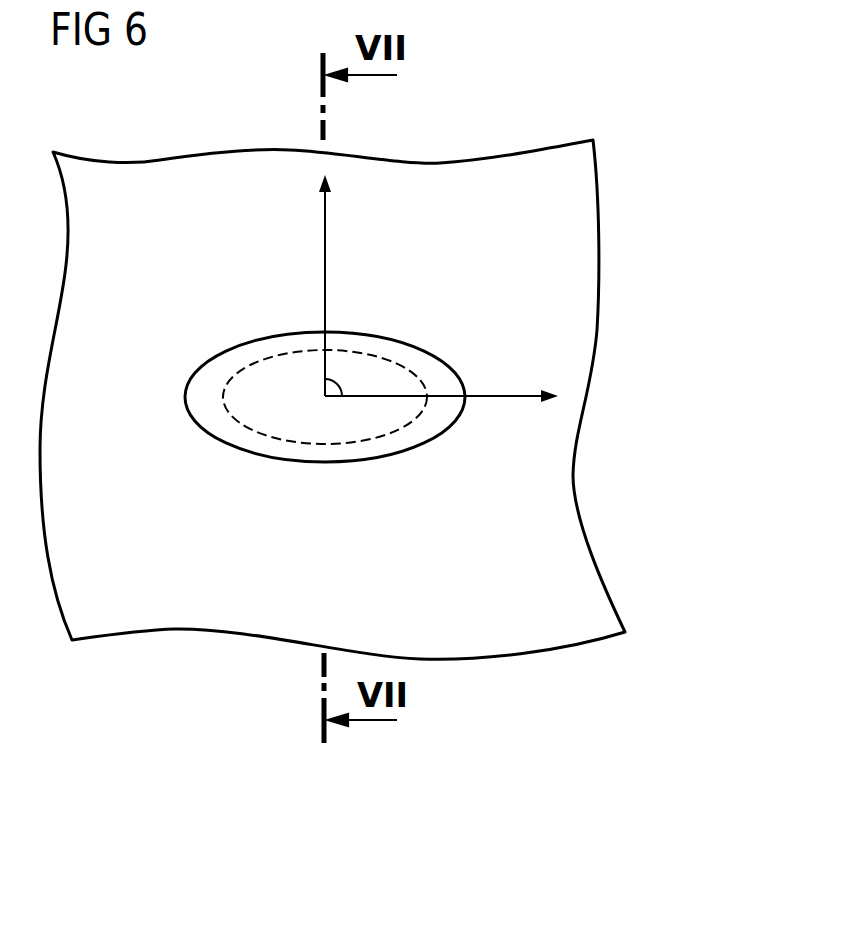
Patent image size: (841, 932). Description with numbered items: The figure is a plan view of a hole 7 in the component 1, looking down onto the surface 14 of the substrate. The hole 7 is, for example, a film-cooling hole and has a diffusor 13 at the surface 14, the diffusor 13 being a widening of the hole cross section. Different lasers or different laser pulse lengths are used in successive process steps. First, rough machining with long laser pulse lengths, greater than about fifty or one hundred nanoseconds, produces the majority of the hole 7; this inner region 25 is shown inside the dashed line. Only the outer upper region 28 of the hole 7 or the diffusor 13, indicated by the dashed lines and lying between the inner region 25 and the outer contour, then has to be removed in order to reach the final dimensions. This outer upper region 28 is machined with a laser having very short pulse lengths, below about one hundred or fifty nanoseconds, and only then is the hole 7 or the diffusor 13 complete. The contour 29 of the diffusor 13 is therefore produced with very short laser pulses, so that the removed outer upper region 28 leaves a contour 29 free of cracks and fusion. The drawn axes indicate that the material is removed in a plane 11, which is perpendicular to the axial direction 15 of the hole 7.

The component 1 is at (382, 482).
The hole 7 is at (388, 305).
The plane 11 is at (441, 415).
The diffusor 13 is at (360, 382).
The surface 14 is at (548, 238).
The axial direction 15 is at (341, 285).
The inner region 25 is at (261, 413).
The outer upper region 28 is at (325, 462).
The contour 29 is at (325, 390).